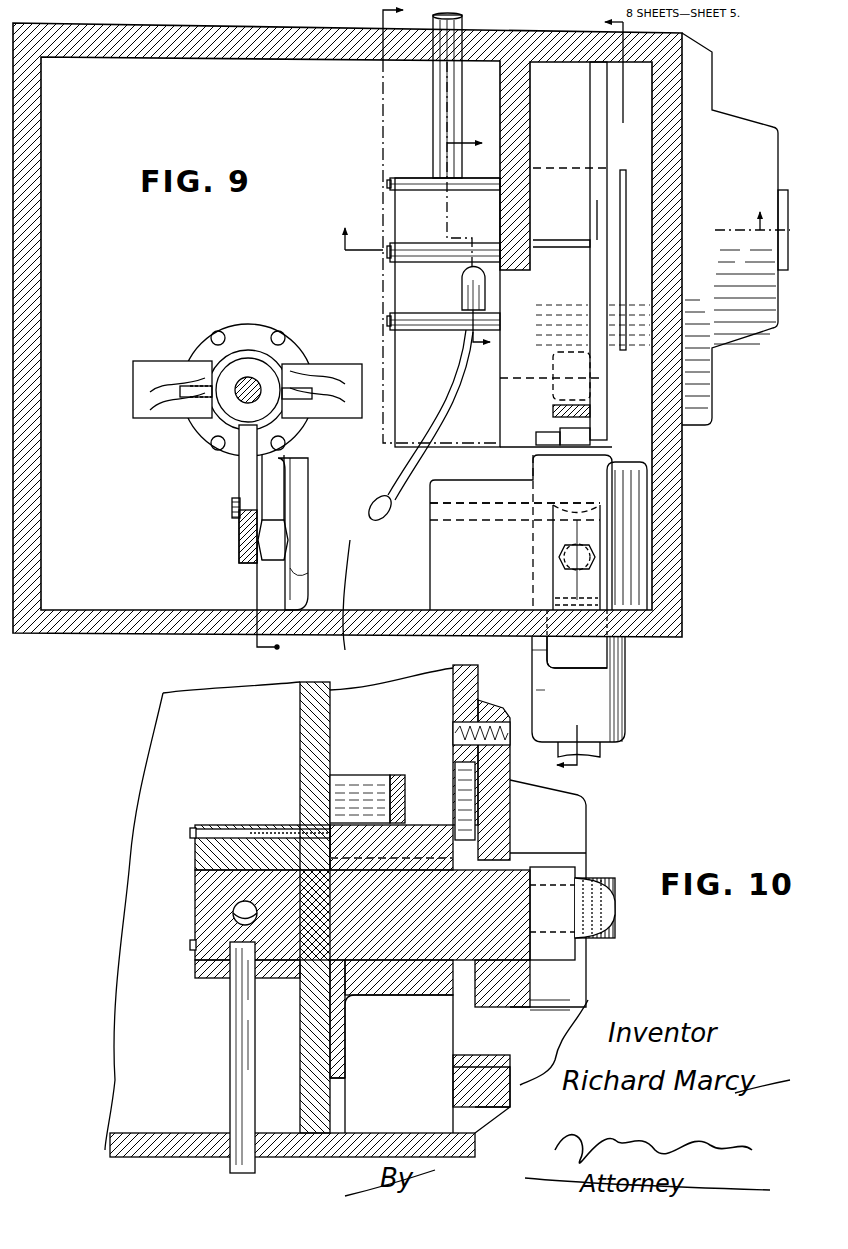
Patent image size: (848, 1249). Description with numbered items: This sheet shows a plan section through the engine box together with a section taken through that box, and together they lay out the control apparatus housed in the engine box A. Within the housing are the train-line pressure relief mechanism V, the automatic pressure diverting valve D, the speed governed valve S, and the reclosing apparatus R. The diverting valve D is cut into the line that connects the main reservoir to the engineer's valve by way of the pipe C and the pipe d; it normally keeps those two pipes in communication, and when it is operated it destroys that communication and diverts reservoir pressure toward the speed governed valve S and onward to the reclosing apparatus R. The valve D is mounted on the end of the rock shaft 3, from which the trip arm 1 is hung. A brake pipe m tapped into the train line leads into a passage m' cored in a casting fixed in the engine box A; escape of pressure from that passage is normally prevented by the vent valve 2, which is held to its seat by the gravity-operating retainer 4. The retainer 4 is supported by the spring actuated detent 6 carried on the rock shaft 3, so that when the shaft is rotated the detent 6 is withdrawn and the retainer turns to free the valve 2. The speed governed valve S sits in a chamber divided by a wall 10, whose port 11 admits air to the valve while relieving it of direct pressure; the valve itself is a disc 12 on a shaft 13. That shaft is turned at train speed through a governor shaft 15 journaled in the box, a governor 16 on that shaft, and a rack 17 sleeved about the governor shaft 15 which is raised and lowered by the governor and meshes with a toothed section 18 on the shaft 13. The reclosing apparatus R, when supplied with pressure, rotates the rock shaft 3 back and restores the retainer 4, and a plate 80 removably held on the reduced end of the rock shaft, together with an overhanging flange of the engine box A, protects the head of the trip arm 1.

In FIG. 9, the housing (engine box) A is at (684, 553).
In FIG. 10, the housing (engine box) A is at (477, 700).
In FIG. 9, the pipe C is at (440, 105).
In FIG. 9, the automatic pressure diverting valve D is at (418, 217).
In FIG. 10, the automatic pressure diverting valve D is at (197, 860).
In FIG. 9, the speed governed valve S is at (458, 376).
In FIG. 9, the train-line pressure relief mechanism V is at (612, 498).
In FIG. 9, the reclosing apparatus (resetting device) R is at (595, 690).
In FIG. 9, the brake pipe m is at (635, 648).
In FIG. 9, the passage m' is at (542, 557).
In FIG. 10, the pipe d is at (238, 1064).
In FIG. 10, the trip arm 1 is at (560, 1040).
In FIG. 9, the vent valve 2 is at (590, 438).
In FIG. 10, the rock shaft 3 is at (400, 950).
In FIG. 9, the gravity-operating retainer 4 is at (598, 372).
In FIG. 9, the detent 6 is at (591, 400).
In FIG. 9, the wall 10 is at (557, 215).
In FIG. 9, the port 11 is at (378, 336).
In FIG. 9, the disc 12 is at (470, 228).
In FIG. 9, the shaft 13 is at (233, 512).
In FIG. 9, the governor shaft 15 is at (252, 385).
In FIG. 9, the governor 16 is at (192, 402).
In FIG. 9, the rack 17 is at (216, 424).
In FIG. 9, the toothed section 18 is at (240, 478).
In FIG. 10, the plate 80 is at (585, 874).